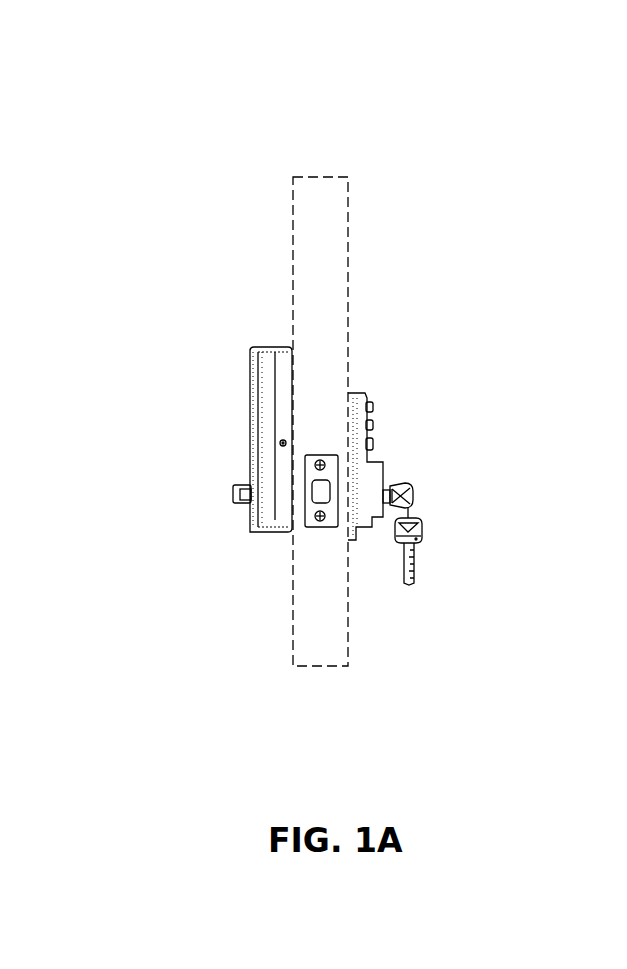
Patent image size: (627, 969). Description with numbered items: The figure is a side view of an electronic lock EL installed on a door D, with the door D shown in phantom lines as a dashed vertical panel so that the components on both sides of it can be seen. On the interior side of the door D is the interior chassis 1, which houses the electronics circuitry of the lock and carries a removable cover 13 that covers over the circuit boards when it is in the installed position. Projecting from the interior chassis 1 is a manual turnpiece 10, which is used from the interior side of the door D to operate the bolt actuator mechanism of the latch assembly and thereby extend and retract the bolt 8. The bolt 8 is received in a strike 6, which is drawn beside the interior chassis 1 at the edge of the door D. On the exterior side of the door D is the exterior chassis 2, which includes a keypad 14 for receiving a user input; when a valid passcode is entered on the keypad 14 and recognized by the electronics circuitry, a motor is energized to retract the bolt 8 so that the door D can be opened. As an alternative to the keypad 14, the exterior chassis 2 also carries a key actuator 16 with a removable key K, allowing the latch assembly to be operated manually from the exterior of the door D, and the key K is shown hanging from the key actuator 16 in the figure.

The interior chassis 1 is at (358, 421).
The exterior chassis 2 is at (470, 382).
The strike 6 is at (308, 520).
The bolt 8 is at (310, 490).
The manual turnpiece 10 is at (233, 495).
The removable cover 13 is at (250, 383).
The keypad 14 is at (409, 378).
The key actuator 16 is at (455, 468).
The removable key K is at (413, 498).
The door D is at (323, 180).
The electronic lock EL is at (540, 157).